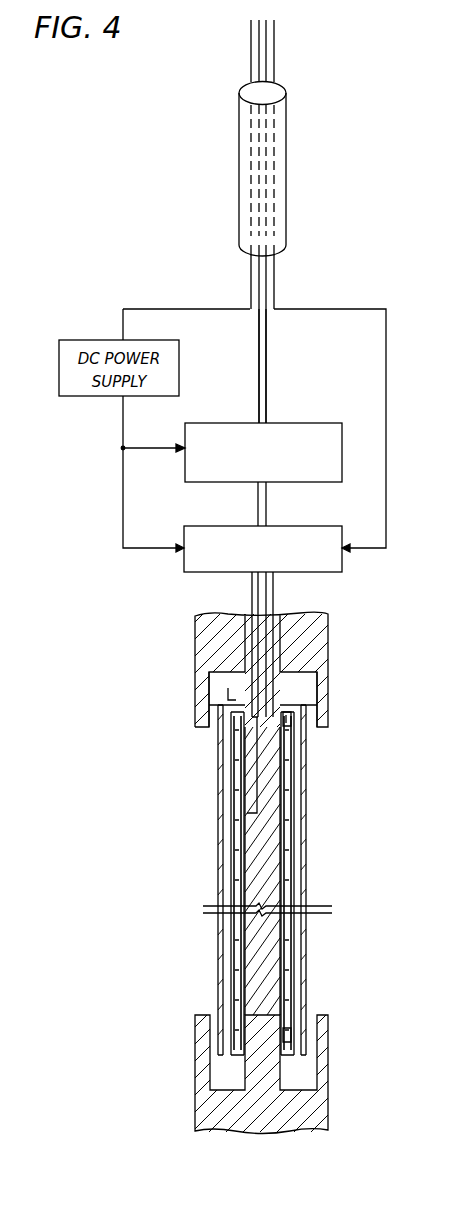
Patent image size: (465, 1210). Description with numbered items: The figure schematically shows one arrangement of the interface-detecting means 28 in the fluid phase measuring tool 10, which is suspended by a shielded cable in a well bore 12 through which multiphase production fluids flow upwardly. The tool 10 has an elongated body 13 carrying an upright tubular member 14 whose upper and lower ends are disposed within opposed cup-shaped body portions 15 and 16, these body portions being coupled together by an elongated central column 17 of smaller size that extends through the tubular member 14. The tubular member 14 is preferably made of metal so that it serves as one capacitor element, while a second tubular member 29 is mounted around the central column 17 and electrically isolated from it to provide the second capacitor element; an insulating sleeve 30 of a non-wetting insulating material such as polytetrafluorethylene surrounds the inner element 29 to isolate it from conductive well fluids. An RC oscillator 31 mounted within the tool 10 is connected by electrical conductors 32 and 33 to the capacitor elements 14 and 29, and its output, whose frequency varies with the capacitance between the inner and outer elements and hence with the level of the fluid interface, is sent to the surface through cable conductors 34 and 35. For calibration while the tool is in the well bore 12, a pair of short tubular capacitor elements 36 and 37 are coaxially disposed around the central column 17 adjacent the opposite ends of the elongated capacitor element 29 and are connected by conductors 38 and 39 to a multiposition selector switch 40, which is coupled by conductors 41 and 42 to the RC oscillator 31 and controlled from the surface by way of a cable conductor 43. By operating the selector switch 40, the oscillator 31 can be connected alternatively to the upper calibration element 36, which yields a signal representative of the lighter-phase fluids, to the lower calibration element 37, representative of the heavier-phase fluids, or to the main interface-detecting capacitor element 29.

The measuring tool 10 is at (332, 784).
The well bore 12 is at (286, 140).
The elongated body 13 is at (318, 976).
The tubular member 14 is at (306, 834).
The upper cup-shaped body portion 15 is at (323, 637).
The lower cup-shaped body portion 16 is at (325, 1110).
The elongated column 17 is at (258, 858).
The interface-detecting means 28 is at (132, 597).
The second tubular member 29 is at (293, 872).
The insulating sleeve 30 is at (293, 926).
The RC oscillator 31 is at (322, 423).
The electrical conductor 32 is at (228, 688).
The electrical conductor 33 is at (257, 792).
The cable conductor 34 is at (257, 368).
The cable conductor 35 is at (268, 372).
The upper calibration capacitor element 36 is at (300, 716).
The lower calibration capacitor element 37 is at (285, 1036).
The electrical conductor 38 is at (262, 593).
The electrical conductor 39 is at (272, 578).
The selector switch 40 is at (342, 530).
The conductor 41 is at (268, 504).
The conductor 42 is at (257, 496).
The cable conductor 43 is at (342, 308).